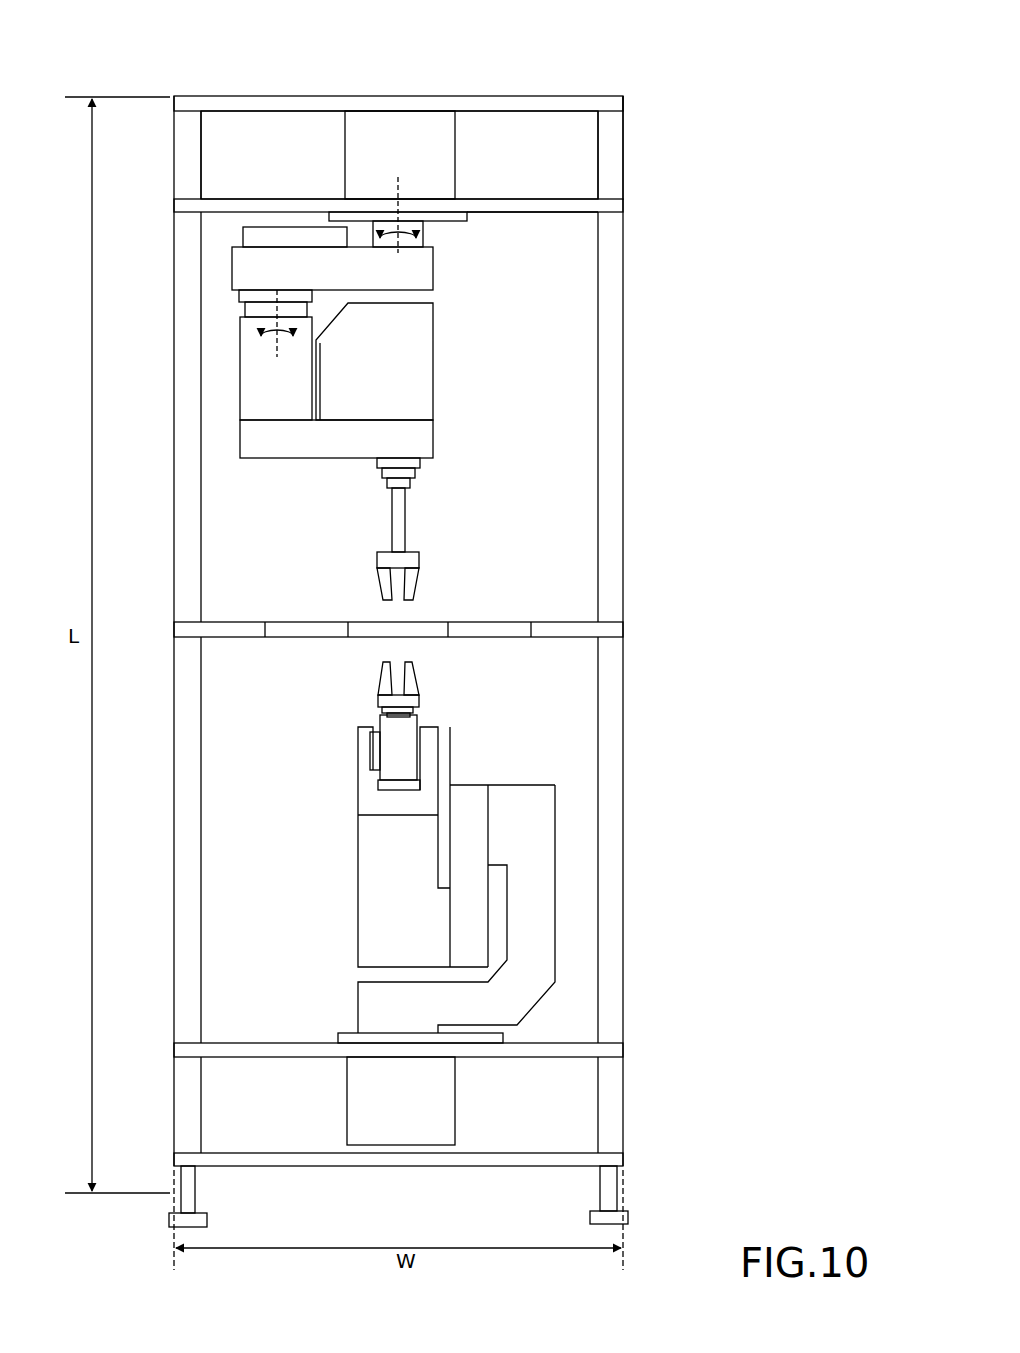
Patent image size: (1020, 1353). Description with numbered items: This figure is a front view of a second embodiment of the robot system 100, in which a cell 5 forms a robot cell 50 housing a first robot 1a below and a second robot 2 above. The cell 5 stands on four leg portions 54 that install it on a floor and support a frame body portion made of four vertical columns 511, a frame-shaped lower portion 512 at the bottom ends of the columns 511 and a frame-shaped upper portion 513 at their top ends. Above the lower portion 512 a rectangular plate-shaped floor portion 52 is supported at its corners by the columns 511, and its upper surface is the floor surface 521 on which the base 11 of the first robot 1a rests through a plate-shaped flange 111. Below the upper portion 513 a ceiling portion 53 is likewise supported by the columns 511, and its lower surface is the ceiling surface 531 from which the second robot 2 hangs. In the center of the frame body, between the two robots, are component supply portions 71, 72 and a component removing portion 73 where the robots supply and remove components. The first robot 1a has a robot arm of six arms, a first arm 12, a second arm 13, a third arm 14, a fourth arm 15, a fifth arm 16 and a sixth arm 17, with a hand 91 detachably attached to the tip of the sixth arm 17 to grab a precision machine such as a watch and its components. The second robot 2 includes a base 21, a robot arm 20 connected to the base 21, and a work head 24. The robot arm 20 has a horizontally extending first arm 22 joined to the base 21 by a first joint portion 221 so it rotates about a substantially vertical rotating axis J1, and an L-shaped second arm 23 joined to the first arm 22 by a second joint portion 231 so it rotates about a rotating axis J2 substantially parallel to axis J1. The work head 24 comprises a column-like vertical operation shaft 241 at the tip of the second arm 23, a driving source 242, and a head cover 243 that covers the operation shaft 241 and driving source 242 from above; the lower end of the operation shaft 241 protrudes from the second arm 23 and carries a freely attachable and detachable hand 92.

The robot system 100 is at (638, 48).
The first robot 1a is at (327, 1093).
The second robot 2 is at (474, 154).
The cell 5 is at (626, 149).
The robot cell 50 is at (625, 115).
The columns 511 is at (185, 960).
The lower portion 512 is at (472, 1166).
The upper portion 513 is at (333, 101).
The floor portion 52 is at (557, 1052).
The floor surface 521 is at (235, 1045).
The ceiling portion 53 is at (553, 205).
The ceiling surface 531 is at (505, 212).
The leg portions 54 is at (612, 1188).
The base 11 is at (398, 1113).
The flange 111 is at (477, 1043).
The first arm 12 is at (535, 912).
The second arm 13 is at (468, 800).
The third arm 14 is at (380, 880).
The fourth arm 15 is at (370, 792).
The fifth arm 16 is at (390, 740).
The sixth arm 17 is at (377, 705).
The hand 91 is at (420, 686).
The hand 92 is at (420, 573).
The robot arm 20 is at (234, 348).
The base 21 is at (413, 130).
The first arm 22 is at (268, 265).
The first joint portion 221 is at (417, 235).
The second arm 23 is at (257, 393).
The second joint portion 231 is at (280, 311).
The work head 24 is at (436, 334).
The operation shaft 241 is at (406, 520).
The driving source 242 is at (368, 377).
The head cover 243 is at (415, 362).
The rotating axis J1 is at (400, 242).
The rotating axis J2 is at (285, 343).
The component supply portion 71 is at (239, 620).
The component supply portion 72 is at (375, 620).
The component removing portion 73 is at (558, 619).